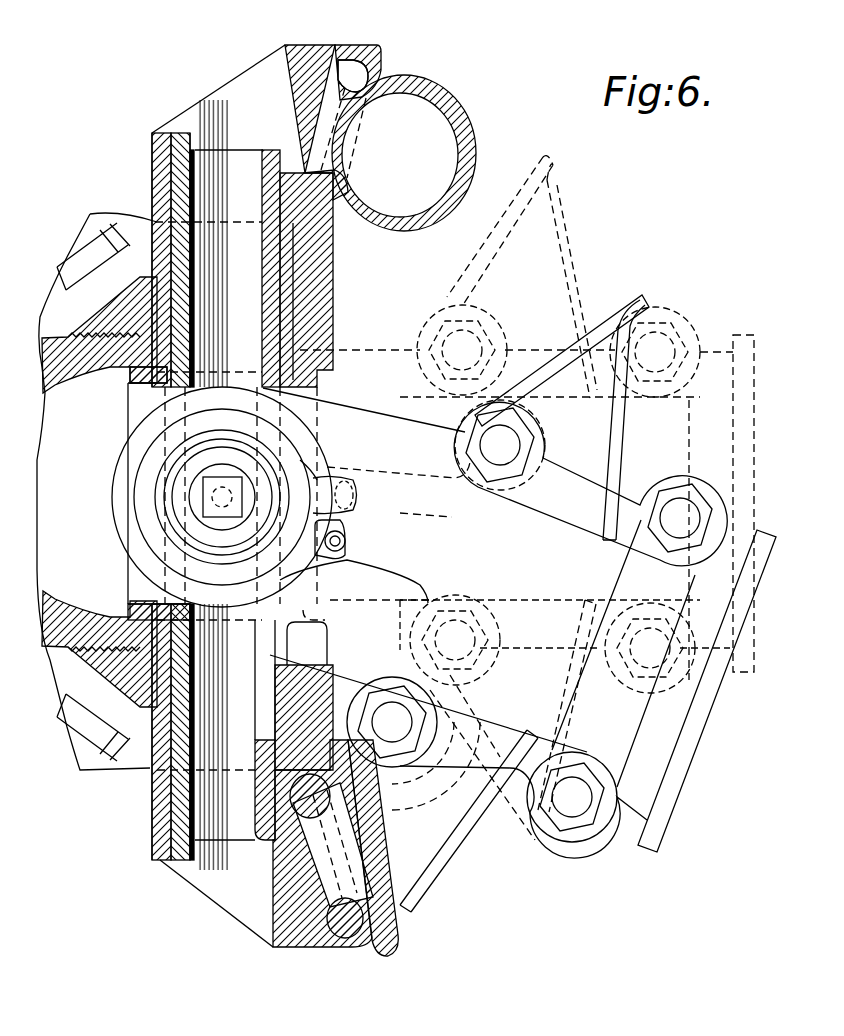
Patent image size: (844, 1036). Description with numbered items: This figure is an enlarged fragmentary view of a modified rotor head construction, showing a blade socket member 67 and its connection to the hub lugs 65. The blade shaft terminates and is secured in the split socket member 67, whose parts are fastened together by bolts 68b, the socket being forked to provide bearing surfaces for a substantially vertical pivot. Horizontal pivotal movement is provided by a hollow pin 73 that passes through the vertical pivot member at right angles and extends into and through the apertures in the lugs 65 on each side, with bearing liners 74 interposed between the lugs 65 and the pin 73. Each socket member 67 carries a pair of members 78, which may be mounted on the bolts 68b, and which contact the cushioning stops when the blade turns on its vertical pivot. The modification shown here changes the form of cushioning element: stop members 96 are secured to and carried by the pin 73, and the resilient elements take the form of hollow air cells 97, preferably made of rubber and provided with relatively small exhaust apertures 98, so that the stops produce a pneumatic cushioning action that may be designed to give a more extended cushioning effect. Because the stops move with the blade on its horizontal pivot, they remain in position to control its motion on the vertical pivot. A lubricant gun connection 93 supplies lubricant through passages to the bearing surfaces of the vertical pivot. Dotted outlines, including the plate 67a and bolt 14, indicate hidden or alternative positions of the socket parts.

The bolt 14 is at (295, 685).
The lug 65 is at (107, 352).
The split socket member 67 is at (523, 534).
The plate extension 67a is at (718, 358).
The bolt 68b is at (676, 500).
The hollow pin 73 is at (262, 168).
The bearing liner 74 is at (300, 290).
The member 78 is at (598, 332).
The lubricant gun connection 93 is at (350, 532).
The stop member 96 is at (318, 58).
The hollow air cell 97 is at (465, 118).
The exhaust aperture 98 is at (415, 90).